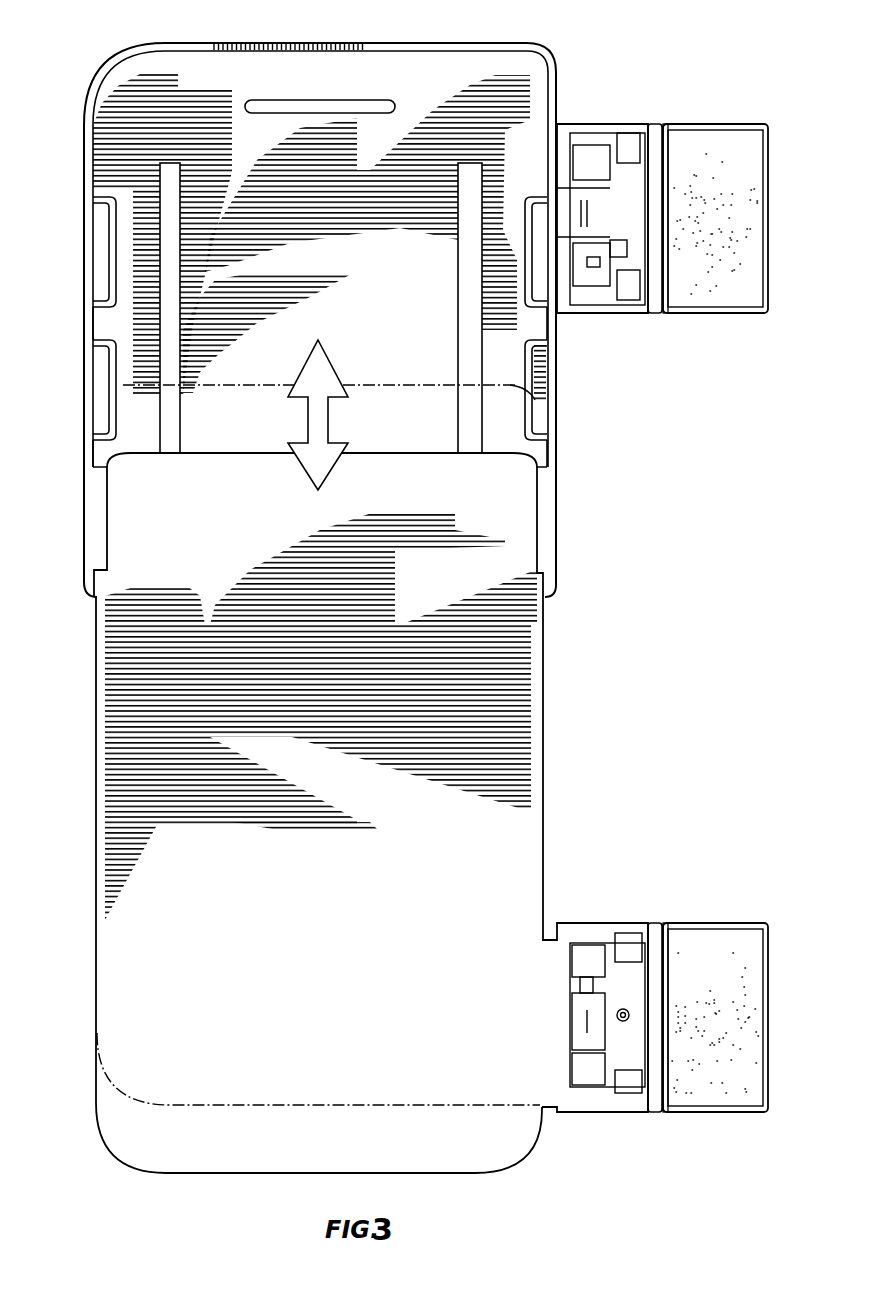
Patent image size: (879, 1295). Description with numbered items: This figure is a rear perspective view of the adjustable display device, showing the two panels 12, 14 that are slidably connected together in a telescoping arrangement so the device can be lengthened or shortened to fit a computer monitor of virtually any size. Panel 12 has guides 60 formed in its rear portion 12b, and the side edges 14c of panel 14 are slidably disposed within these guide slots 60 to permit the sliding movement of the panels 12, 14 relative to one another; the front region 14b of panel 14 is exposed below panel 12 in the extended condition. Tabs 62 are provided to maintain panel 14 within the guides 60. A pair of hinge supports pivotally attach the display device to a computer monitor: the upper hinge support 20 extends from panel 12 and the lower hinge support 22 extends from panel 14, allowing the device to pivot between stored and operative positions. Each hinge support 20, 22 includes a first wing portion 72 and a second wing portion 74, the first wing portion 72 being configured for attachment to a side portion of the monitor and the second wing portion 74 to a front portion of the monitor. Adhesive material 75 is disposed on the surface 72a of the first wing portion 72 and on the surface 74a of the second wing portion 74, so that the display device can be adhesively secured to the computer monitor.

The panel 12 is at (546, 47).
The rear portion 12b is at (411, 88).
The panel 14 is at (130, 530).
The drawer front wall 14b is at (483, 573).
The side edges 14c is at (105, 469).
The upper hinge support 20 is at (600, 119).
The lower hinge support 22 is at (600, 918).
The guides 60 is at (104, 186).
The tabs 62 is at (100, 522).
The first wing portion 72 is at (663, 241).
The surface 72a is at (667, 314).
The second wing portion 74 is at (758, 316).
The surface 74a is at (600, 308).
The adhesive material 75 is at (725, 280).